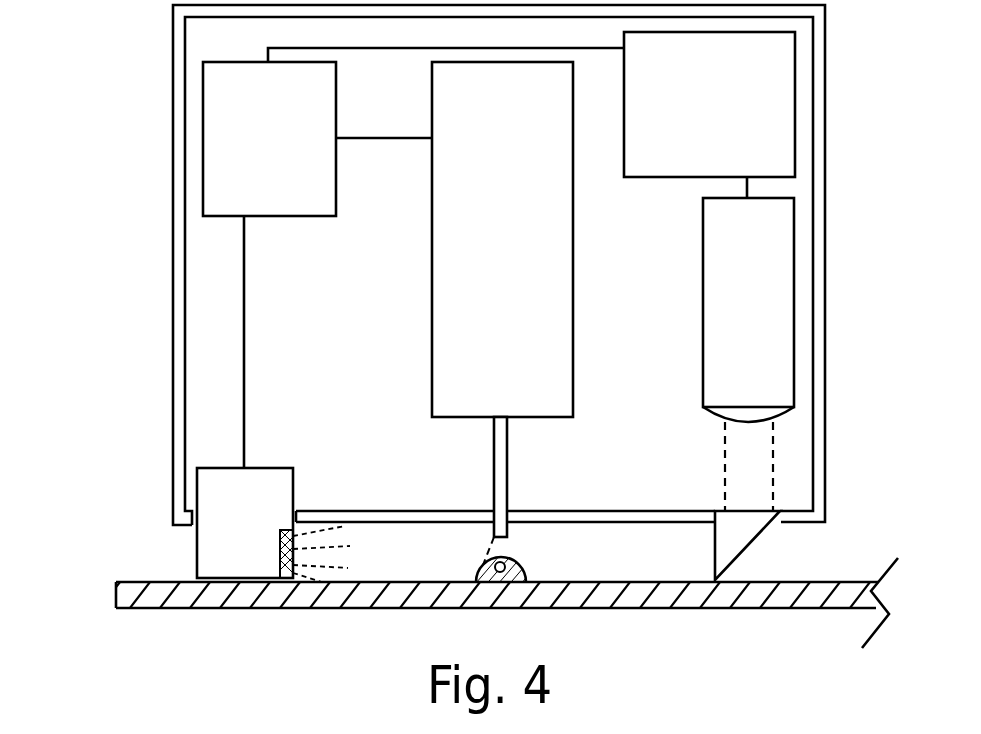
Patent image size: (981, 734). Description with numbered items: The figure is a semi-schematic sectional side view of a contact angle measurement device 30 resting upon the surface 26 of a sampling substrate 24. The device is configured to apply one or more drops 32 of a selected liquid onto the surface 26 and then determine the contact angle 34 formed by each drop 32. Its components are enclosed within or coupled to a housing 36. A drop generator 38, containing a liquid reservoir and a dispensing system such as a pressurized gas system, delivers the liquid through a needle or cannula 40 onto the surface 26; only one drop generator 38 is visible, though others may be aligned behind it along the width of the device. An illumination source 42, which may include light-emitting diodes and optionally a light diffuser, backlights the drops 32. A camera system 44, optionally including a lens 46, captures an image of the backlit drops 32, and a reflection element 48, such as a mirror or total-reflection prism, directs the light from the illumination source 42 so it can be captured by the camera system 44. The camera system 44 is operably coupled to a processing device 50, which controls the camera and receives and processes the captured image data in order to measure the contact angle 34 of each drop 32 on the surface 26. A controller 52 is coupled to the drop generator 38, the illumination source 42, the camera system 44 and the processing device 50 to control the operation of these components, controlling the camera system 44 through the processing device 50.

The contact angle measurement device 30 is at (112, 89).
The housing 36 is at (173, 305).
The controller 52 is at (322, 204).
The drop generator 38 is at (555, 399).
The processing device 50 is at (777, 161).
The camera system 44 is at (703, 238).
The lens 46 is at (712, 418).
The reflection element 48 is at (752, 547).
The illumination source 42 is at (268, 467).
The needle or cannula 40 is at (508, 477).
The surface 26 is at (397, 582).
The drop 32 is at (526, 576).
The contact angle 34 is at (505, 563).
The sampling substrate 24 is at (620, 610).